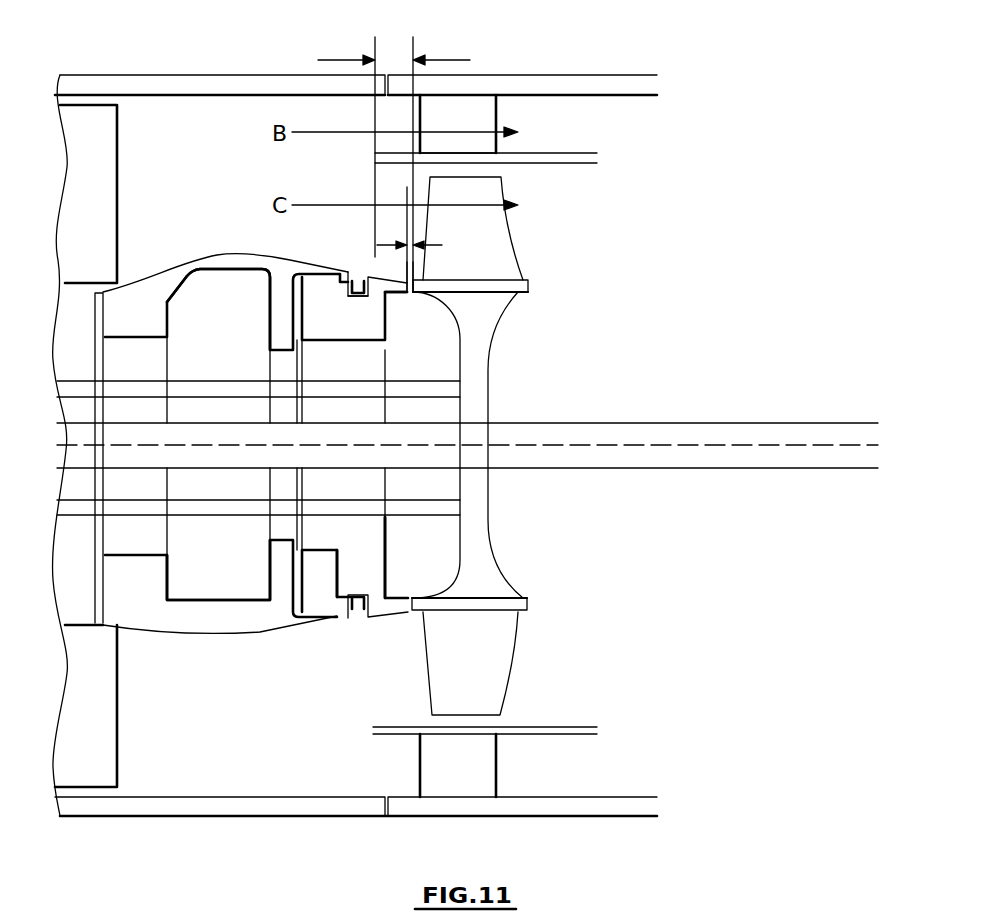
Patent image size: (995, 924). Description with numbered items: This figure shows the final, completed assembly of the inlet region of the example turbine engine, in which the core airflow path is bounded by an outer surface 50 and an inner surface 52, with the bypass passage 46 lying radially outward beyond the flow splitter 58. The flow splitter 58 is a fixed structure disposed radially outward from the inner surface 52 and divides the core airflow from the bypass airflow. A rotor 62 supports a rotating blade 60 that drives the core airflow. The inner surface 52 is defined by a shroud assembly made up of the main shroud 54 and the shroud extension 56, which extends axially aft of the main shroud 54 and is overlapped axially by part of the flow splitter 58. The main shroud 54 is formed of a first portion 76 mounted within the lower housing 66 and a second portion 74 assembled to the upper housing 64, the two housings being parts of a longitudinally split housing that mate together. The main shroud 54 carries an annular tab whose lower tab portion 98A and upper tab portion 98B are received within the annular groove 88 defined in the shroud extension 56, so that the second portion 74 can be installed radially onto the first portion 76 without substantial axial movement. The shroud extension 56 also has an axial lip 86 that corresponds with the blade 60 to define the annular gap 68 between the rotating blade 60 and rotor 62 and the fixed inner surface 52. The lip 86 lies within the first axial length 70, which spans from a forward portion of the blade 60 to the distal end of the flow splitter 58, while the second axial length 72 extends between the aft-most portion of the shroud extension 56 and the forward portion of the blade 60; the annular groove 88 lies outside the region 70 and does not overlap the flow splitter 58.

The bypass passage 46 is at (530, 120).
The outer surface 50 is at (222, 104).
The inner surface 52 is at (170, 258).
The main shroud 54 is at (280, 270).
The shroud extension 56 is at (370, 565).
The flow splitter 58 is at (383, 157).
The blade 60 is at (500, 258).
The rotor 62 is at (480, 348).
The upper housing 64 is at (203, 83).
The lower housing 66 is at (203, 807).
The gap 68 is at (412, 308).
The first axial length 70 is at (470, 60).
The second axial length 72 is at (440, 245).
The second portion of the main shroud 74 is at (244, 258).
The first portion of the main shroud 76 is at (243, 632).
The lip 86 is at (400, 285).
The annular groove 88 is at (360, 312).
The lower tab portion 98A is at (360, 612).
The upper tab portion 98B is at (357, 276).